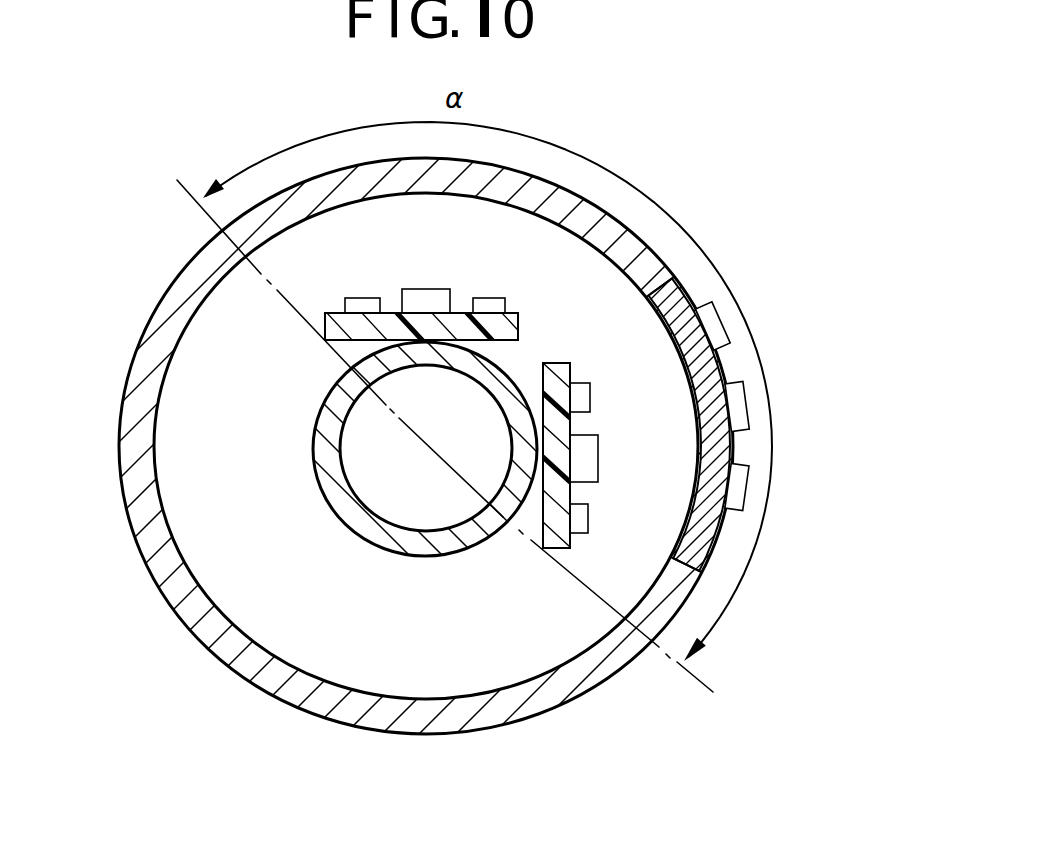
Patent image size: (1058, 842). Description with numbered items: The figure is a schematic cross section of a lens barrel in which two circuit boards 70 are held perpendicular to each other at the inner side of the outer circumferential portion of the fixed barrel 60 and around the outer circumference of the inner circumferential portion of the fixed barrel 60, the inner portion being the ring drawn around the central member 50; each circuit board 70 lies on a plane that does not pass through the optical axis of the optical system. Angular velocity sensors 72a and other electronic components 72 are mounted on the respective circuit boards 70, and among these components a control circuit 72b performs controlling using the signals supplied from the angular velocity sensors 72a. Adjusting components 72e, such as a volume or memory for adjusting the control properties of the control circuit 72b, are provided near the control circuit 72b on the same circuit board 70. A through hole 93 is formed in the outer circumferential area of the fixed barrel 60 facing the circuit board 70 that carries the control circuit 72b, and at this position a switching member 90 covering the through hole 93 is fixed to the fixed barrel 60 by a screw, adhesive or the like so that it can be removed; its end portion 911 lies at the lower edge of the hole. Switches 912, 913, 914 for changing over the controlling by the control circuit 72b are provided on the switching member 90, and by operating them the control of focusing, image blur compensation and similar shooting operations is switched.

The rotating shaft 50 is at (333, 481).
The fixed barrel 60 is at (320, 694).
The circuit board 70 is at (518, 328).
The electronic component 72 is at (360, 298).
The angular velocity sensor 72a is at (428, 289).
The control circuit 72b is at (591, 396).
The adjusting component 72e is at (589, 518).
The switching member 90 is at (745, 526).
The through hole 93 is at (676, 280).
The board end portion 911 is at (694, 560).
The switch 912 is at (714, 318).
The switch 913 is at (746, 402).
The switch 914 is at (746, 487).